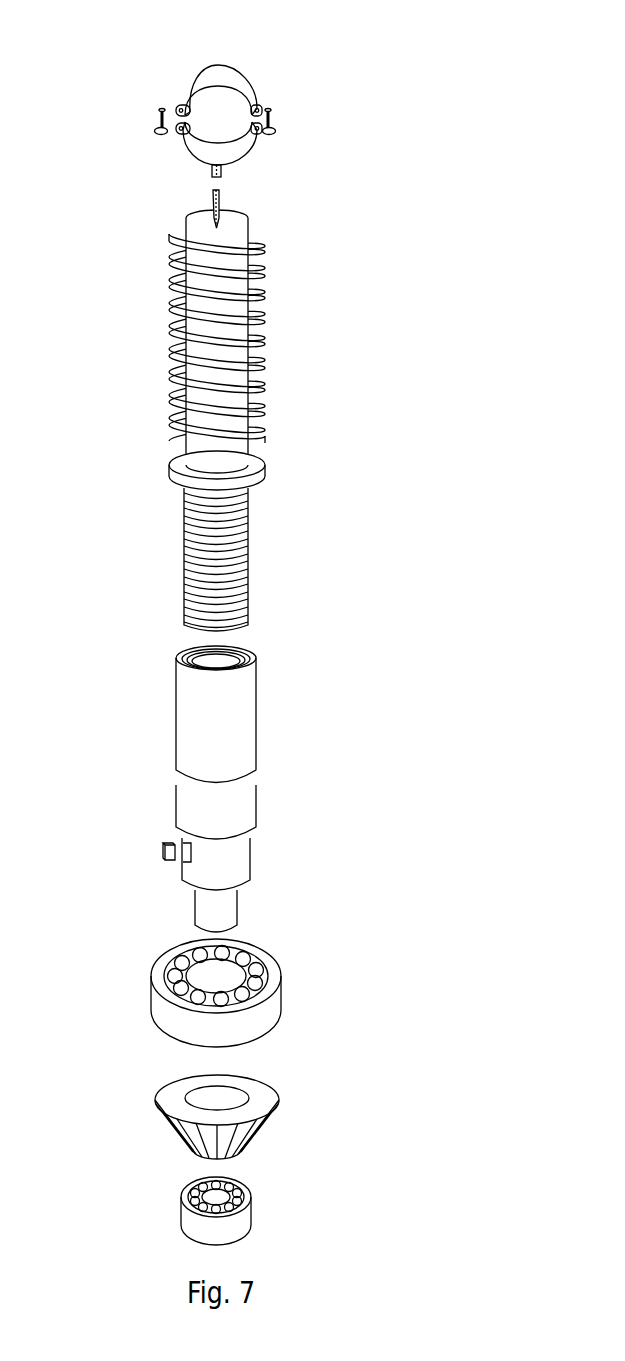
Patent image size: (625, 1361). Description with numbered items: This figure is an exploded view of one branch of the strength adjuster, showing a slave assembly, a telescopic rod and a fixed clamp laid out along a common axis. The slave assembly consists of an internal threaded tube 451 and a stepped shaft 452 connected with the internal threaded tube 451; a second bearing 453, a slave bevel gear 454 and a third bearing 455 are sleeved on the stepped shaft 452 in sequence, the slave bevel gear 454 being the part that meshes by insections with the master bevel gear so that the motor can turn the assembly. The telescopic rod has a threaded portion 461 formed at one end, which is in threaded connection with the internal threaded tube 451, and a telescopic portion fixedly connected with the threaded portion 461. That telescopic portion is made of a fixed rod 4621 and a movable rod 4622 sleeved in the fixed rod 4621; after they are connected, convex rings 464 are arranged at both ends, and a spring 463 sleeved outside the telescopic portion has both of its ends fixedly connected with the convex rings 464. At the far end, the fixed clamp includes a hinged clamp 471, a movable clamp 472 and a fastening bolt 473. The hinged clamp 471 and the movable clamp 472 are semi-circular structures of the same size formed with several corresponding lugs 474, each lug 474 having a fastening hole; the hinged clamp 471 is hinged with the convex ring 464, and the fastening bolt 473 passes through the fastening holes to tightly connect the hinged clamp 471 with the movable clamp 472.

The internal threaded tube 451 is at (242, 720).
The stepped shaft 452 is at (242, 856).
The second bearing 453 is at (255, 1005).
The slave bevel gear 454 is at (243, 1128).
The third bearing 455 is at (232, 1207).
The threaded portion 461 is at (233, 567).
The fixed rod 4621 is at (232, 430).
The movable rod 4622 is at (232, 288).
The spring 463 is at (229, 327).
The convex ring 464 is at (173, 463).
The hinged clamp 471 is at (232, 150).
The movable clamp 472 is at (236, 79).
The fastening bolt 473 is at (273, 117).
The lug 474 is at (178, 108).